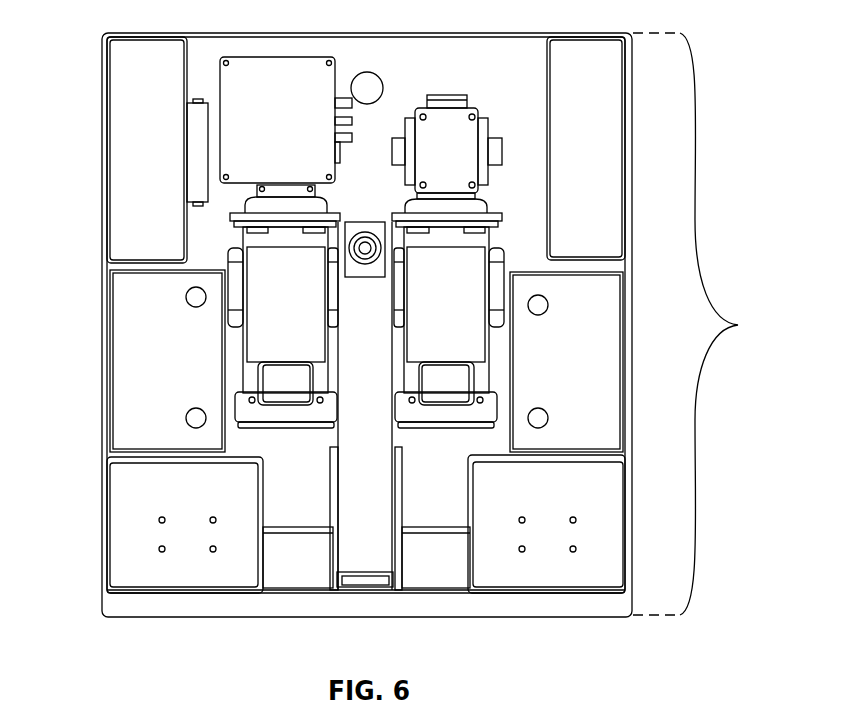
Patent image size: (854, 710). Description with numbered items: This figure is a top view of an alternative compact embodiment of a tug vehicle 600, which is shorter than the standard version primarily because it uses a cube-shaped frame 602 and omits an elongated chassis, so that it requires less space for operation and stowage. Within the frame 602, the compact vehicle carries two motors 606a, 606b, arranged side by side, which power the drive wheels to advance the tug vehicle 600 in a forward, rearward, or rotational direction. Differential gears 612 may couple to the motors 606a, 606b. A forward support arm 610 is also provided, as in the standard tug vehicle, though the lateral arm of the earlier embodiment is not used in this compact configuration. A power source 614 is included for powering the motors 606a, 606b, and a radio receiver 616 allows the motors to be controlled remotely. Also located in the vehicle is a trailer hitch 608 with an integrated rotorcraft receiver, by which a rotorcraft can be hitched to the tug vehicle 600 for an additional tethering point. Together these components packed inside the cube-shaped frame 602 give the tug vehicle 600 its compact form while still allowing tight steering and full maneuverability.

The compact tug vehicle 600 is at (590, 618).
The cube-shaped frame 602 is at (710, 324).
The motor 606a is at (275, 425).
The motor 606b is at (457, 425).
The trailer hitch 608 is at (361, 222).
The forward support arm 610 is at (377, 555).
The differential gears 612 is at (478, 112).
The power source 614 is at (127, 452).
The radio receiver 616 is at (196, 101).